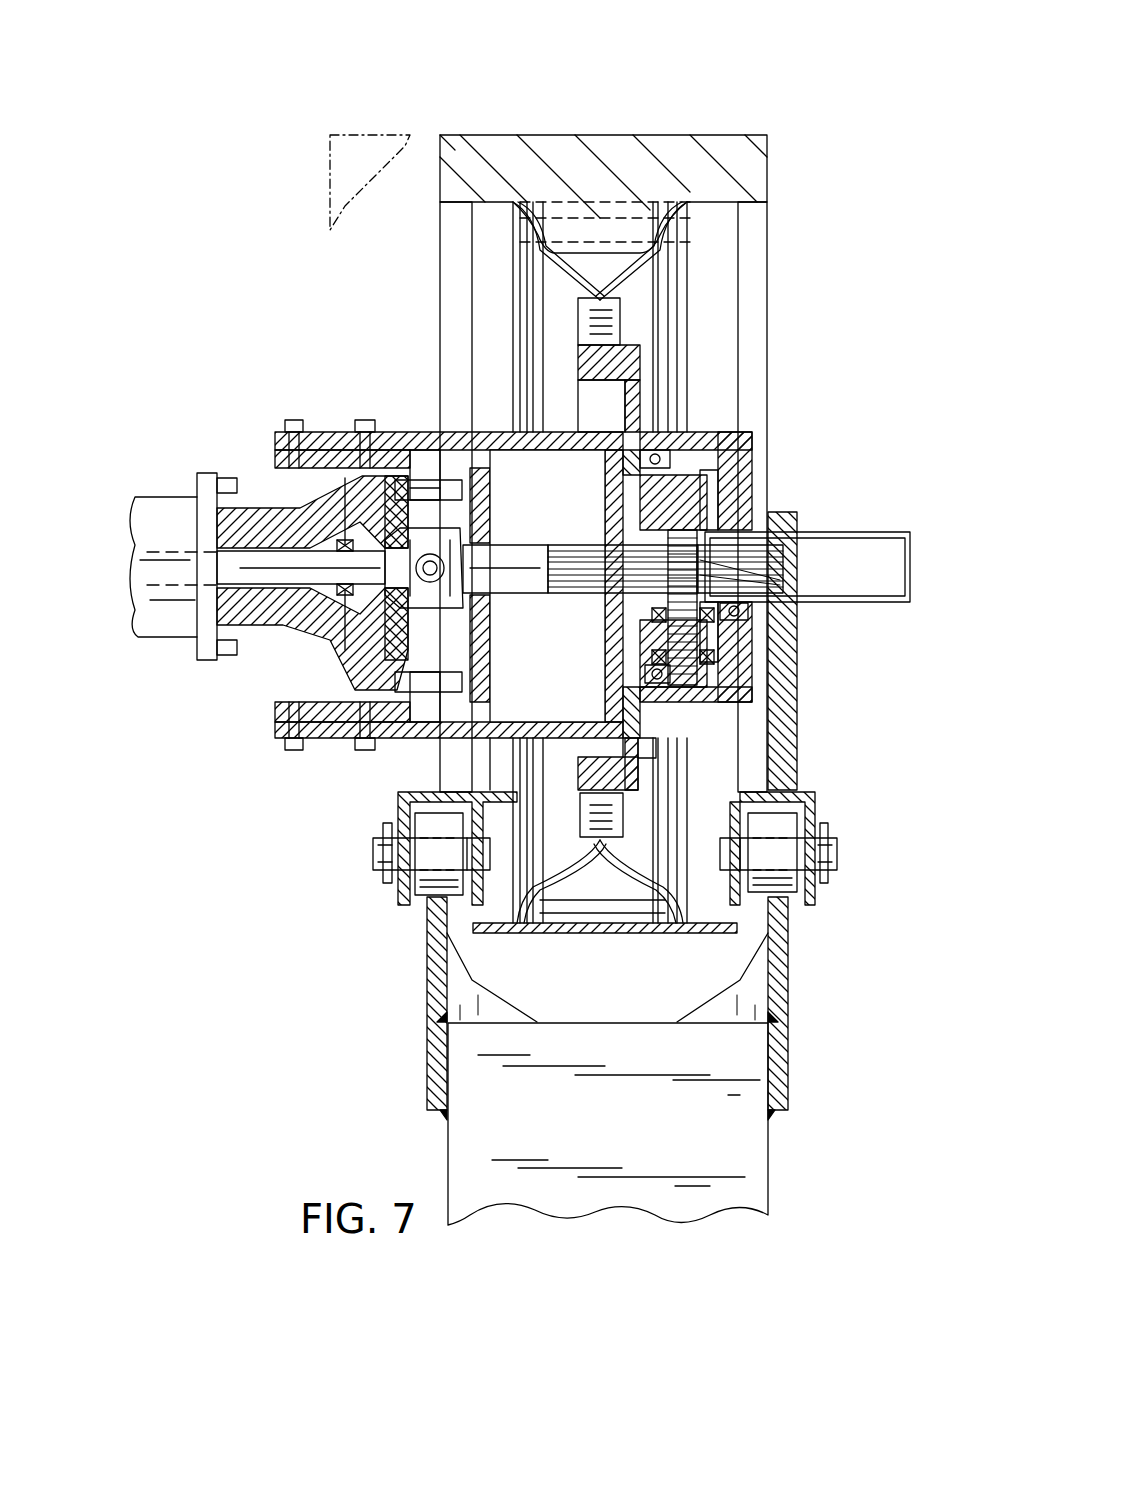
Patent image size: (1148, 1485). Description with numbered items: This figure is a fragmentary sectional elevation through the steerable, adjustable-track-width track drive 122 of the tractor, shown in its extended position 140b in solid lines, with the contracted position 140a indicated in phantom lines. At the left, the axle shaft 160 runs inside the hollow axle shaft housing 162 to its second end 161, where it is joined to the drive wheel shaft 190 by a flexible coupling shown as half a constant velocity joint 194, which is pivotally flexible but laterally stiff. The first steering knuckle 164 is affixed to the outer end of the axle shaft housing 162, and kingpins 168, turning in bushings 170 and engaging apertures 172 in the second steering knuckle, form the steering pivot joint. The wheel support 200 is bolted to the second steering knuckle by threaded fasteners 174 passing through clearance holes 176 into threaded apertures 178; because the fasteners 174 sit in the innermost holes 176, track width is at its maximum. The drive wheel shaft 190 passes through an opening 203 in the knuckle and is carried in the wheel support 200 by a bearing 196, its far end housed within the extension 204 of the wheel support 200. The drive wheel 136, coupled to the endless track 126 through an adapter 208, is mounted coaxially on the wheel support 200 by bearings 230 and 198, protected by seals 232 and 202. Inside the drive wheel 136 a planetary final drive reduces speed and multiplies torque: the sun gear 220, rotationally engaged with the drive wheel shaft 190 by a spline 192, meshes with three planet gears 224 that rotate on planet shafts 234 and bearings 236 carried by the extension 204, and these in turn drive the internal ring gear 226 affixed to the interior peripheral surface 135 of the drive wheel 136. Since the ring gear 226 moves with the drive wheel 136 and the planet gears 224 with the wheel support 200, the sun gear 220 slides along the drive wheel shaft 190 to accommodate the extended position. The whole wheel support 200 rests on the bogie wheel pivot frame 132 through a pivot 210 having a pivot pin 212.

The steerable track drive 122 is at (583, 1268).
The endless track 126 is at (724, 133).
The bogie wheel pivot frame 132 is at (795, 1010).
The interior peripheral surface 135 is at (760, 695).
The drive wheel 136 is at (600, 345).
The contracted position 140a is at (340, 110).
The extended position 140b is at (580, 468).
The axle shaft 160 is at (265, 637).
The second end 161 is at (455, 600).
The axle shaft housing 162 is at (167, 640).
The first steering knuckle 164 is at (330, 490).
The kingpins 168 is at (422, 452).
The bushings 170 is at (345, 478).
The apertures 172 is at (465, 640).
The threaded fasteners 174 is at (282, 755).
The clearance holes 176 is at (302, 755).
The threaded apertures 178 is at (346, 740).
The drive wheel shaft 190 is at (522, 535).
The spline 192 is at (578, 543).
The constant velocity joint 194 is at (465, 615).
The bearing 196 is at (590, 630).
The bearing 198 is at (740, 476).
The wheel support 200 is at (287, 432).
The seal 202 is at (740, 502).
The opening 203 is at (497, 512).
The extension 204 is at (812, 532).
The adapter 208 is at (710, 205).
The pivot 210 is at (382, 918).
The pivot pin 212 is at (372, 878).
The sun gear 220 is at (790, 573).
The planet gears 224 is at (760, 613).
The internal ring gear 226 is at (715, 465).
The bearing 230 is at (662, 702).
The seal 232 is at (630, 680).
The planet shafts 234 is at (722, 640).
The bearings 236 is at (722, 655).